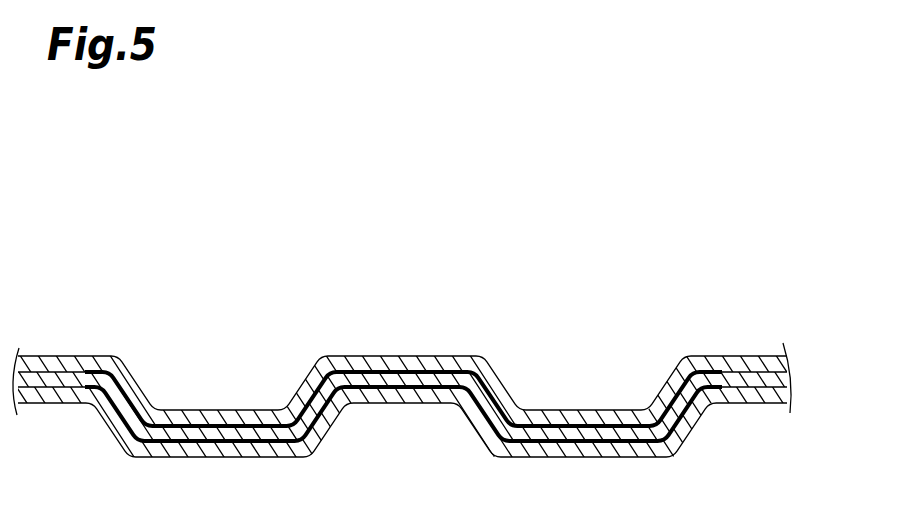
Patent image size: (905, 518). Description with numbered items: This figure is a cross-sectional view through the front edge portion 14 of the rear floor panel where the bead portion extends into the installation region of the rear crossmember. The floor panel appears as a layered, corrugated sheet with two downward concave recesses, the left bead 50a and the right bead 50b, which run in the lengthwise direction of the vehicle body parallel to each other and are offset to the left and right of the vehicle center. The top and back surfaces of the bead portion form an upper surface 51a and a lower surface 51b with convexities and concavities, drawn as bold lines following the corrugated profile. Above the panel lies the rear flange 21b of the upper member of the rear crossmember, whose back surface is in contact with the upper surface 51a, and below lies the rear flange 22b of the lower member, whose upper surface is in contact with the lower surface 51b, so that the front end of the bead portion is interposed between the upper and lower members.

The front edge portion 14 is at (779, 378).
The rear flange 21b is at (741, 365).
The rear flange 22b is at (755, 398).
The upper surface with convexities and concavities 51a is at (401, 368).
The lower surface with convexities and concavities 51b is at (392, 390).
The left bead 50a is at (220, 435).
The right bead 50b is at (588, 435).